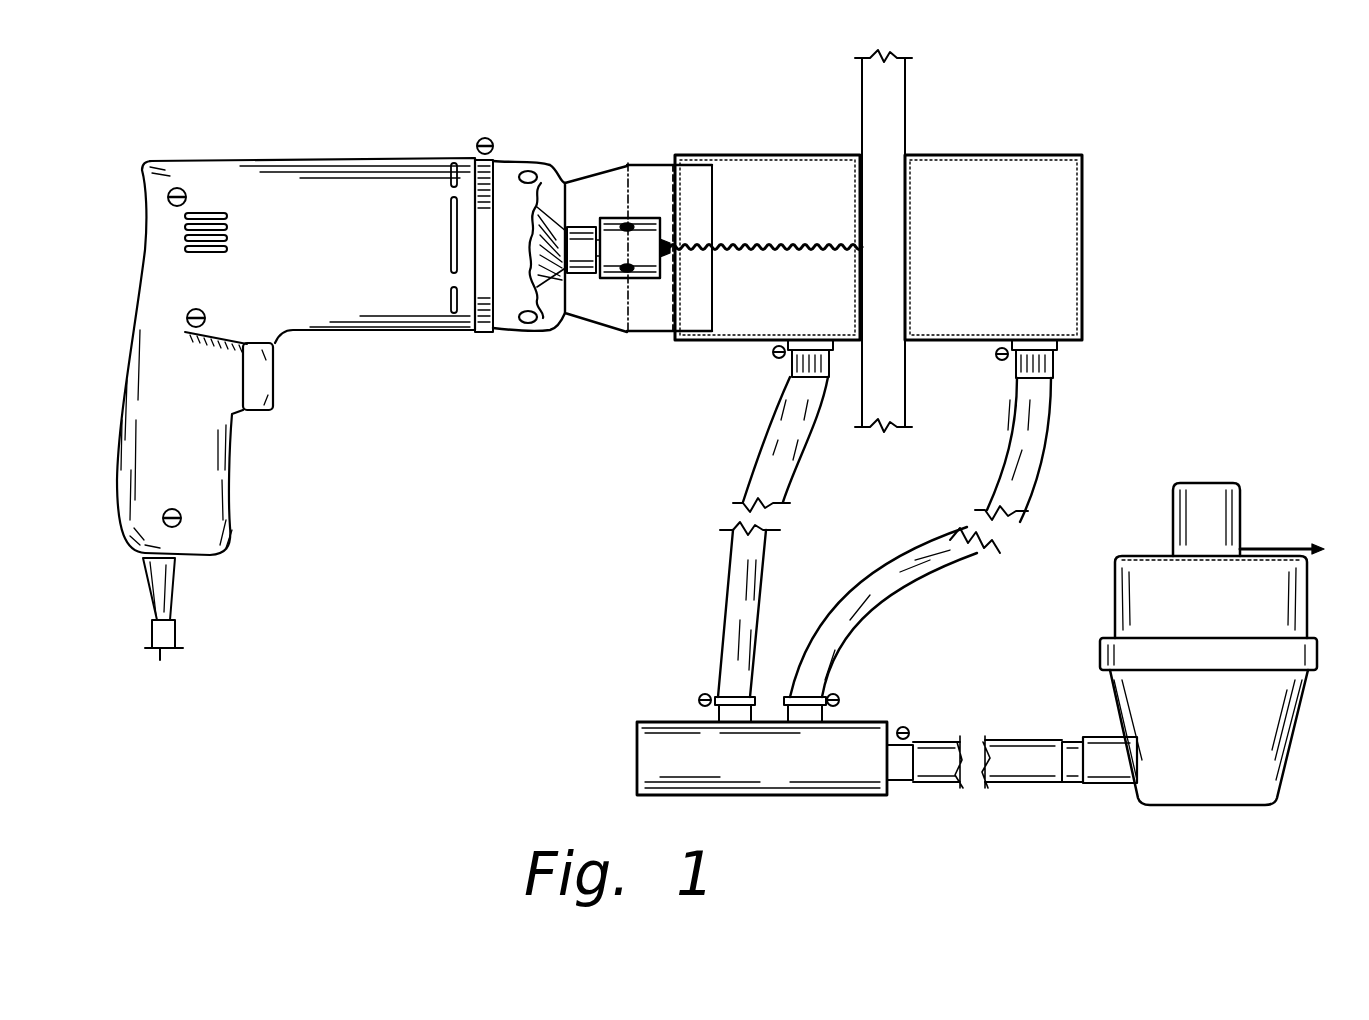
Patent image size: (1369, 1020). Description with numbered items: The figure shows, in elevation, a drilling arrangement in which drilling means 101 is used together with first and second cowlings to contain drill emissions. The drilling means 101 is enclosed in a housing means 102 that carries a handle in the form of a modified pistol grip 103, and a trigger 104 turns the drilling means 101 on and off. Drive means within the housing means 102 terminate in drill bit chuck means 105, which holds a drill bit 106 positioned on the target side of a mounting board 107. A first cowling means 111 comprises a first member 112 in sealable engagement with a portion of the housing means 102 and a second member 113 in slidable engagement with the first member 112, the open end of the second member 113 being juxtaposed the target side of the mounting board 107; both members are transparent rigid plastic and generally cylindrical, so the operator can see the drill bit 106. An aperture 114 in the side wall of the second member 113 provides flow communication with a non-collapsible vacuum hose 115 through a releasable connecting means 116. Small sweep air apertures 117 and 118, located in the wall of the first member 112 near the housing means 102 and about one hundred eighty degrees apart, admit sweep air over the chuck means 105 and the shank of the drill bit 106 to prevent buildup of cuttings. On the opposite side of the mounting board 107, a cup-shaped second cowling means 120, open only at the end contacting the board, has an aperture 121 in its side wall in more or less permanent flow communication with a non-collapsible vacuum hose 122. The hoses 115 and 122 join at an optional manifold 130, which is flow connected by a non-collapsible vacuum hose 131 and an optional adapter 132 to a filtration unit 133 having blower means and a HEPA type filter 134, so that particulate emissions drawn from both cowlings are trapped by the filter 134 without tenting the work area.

The drilling means 101 is at (260, 158).
The housing means 102 is at (351, 262).
The modified pistol grip 103 is at (232, 500).
The trigger 104 is at (273, 392).
The drill bit chuck means 105 is at (643, 218).
The drill bit 106 is at (790, 245).
The mounting board 107 is at (907, 97).
The first cowling means 111 is at (693, 345).
The first member 112 is at (627, 333).
The second member 113 is at (746, 155).
The aperture 114 is at (808, 340).
The non-collapsible vacuum hose 115 is at (762, 437).
The releasable connecting means 116 is at (790, 362).
The sweep air aperture 117 is at (526, 170).
The sweep air aperture 118 is at (527, 325).
The second cowling means 120 is at (1012, 155).
The aperture 121 is at (1034, 340).
The non-collapsible vacuum hose 122 is at (1040, 488).
The manifold 130 is at (657, 720).
The non-collapsible vacuum hose 131 is at (1013, 742).
The adapter 132 is at (1103, 738).
The filtration unit 133 is at (1107, 600).
The blower means and HEPA type filter 134 is at (1224, 483).